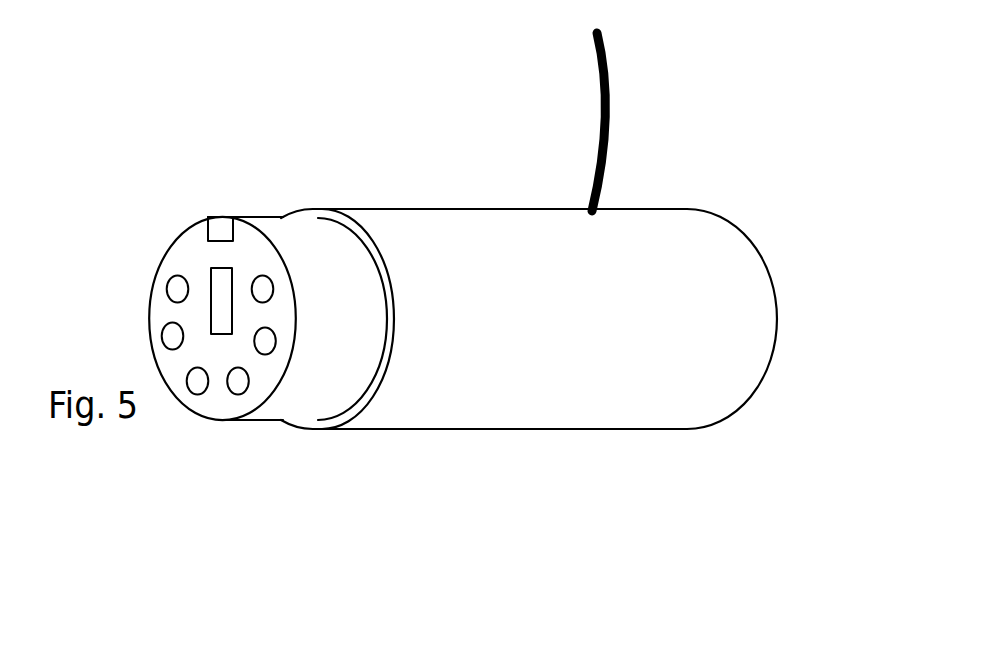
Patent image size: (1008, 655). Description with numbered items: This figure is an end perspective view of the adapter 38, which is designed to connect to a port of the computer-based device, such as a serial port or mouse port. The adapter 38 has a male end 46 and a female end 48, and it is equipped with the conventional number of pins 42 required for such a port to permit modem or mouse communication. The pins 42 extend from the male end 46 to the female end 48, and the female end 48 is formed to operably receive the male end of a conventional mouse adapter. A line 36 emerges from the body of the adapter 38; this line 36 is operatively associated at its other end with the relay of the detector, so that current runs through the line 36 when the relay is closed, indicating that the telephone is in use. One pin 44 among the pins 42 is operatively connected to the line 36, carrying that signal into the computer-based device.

The line 36 is at (603, 173).
The adapter 38 is at (536, 228).
The pins 42 is at (233, 396).
The pin 44 is at (273, 290).
The male end 46 is at (280, 217).
The female end 48 is at (733, 225).